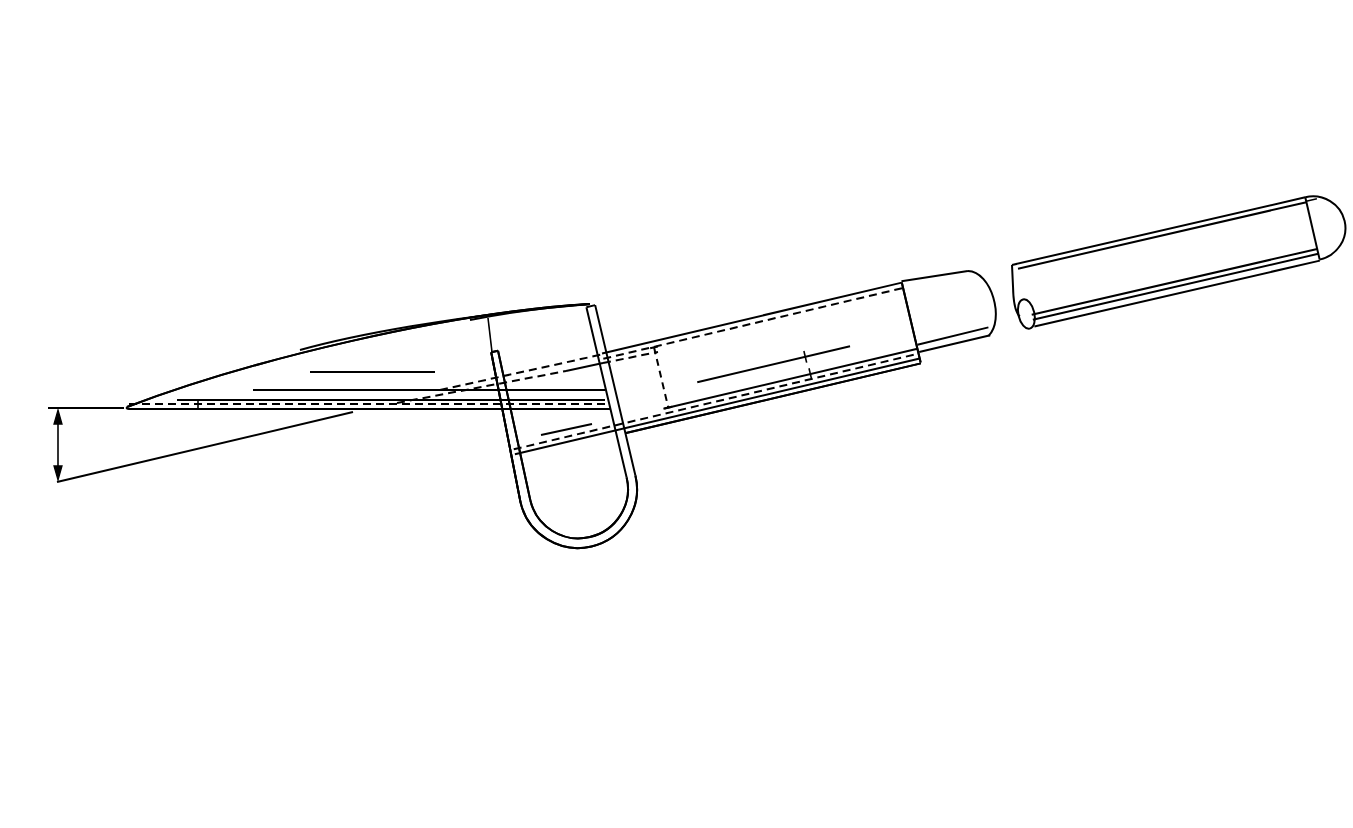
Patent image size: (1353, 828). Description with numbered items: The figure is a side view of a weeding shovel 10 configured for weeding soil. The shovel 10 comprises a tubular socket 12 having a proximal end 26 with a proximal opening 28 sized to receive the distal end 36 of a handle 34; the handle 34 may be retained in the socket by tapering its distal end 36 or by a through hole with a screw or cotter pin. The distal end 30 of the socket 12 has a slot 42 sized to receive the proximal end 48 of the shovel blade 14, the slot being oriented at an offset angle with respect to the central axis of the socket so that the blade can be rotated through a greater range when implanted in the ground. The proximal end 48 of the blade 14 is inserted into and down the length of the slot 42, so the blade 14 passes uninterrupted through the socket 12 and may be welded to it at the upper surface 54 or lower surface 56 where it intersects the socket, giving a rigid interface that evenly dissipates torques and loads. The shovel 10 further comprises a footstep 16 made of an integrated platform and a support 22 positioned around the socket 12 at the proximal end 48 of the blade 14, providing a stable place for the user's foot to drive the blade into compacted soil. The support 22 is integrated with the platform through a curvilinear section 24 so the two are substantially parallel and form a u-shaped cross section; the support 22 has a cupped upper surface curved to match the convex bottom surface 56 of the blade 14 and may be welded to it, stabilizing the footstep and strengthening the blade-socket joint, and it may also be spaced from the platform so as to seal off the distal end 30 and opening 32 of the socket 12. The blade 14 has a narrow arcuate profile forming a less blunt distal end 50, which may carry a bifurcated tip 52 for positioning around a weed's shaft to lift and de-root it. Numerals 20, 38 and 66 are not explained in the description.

The shovel 10 is at (228, 116).
The tubular socket 12 is at (727, 322).
The shovel blade 14 is at (340, 336).
The footstep 16 is at (640, 490).
The clip arms 20 is at (603, 330).
The support 22 is at (520, 494).
The curvilinear section 24 is at (597, 548).
The proximal end of socket 26 is at (904, 368).
The proximal opening 28 is at (913, 322).
The distal end of socket 30 is at (533, 464).
The opening of socket distal end 32 is at (514, 463).
The handle 34 is at (942, 290).
The distal end of handle 36 is at (812, 378).
The end cap cylinder 38 is at (1267, 200).
The slot 42 is at (548, 412).
The proximal end of blade 48 is at (557, 330).
The distal end of blade 50 is at (205, 376).
The bifurcated tip 52 is at (162, 400).
The upper surface of blade 54 is at (428, 322).
The lower surface of blade 56 is at (380, 394).
The arm attachment line 66 is at (488, 317).